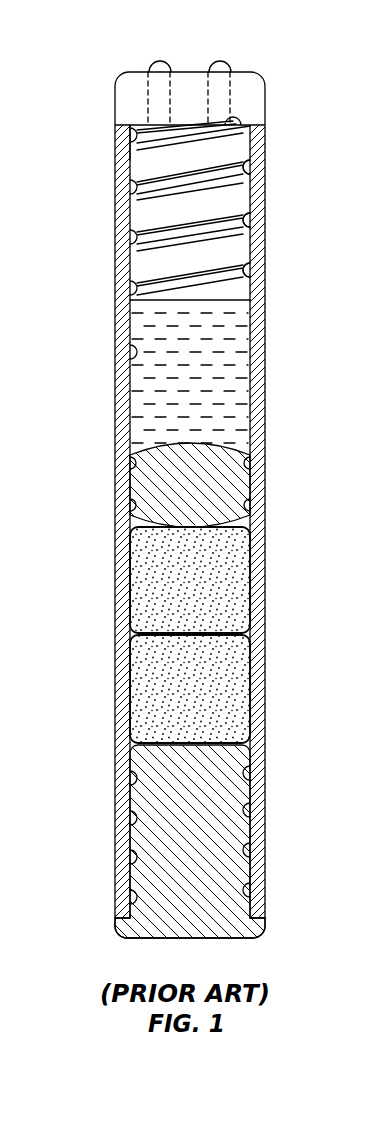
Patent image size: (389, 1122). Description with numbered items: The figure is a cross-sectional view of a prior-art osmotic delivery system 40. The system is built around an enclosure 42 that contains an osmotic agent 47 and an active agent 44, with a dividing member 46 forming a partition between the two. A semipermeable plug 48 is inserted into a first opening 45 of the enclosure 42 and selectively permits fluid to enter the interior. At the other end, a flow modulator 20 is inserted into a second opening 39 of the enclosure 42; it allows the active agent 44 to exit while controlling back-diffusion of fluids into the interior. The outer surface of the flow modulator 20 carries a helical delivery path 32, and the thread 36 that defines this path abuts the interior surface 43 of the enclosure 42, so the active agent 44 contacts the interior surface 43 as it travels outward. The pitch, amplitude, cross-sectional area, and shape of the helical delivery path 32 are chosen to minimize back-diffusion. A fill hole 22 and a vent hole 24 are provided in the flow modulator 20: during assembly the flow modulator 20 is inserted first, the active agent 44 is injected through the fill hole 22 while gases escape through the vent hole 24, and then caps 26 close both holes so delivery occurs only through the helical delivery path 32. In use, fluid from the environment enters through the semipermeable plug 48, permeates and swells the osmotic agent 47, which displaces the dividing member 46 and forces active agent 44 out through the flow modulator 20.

The flow modulator 20 is at (268, 91).
The fill hole 22 is at (157, 97).
The vent hole 24 is at (222, 103).
The caps 26 is at (222, 60).
The helical delivery path 32 is at (127, 183).
The thread 36 is at (122, 160).
The second opening 39 is at (281, 248).
The osmotic delivery system 40 is at (268, 156).
The enclosure 42 is at (122, 312).
The interior surface 43 is at (142, 355).
The active agent 44 is at (140, 392).
The first opening 45 is at (246, 221).
The dividing member 46 is at (140, 487).
The osmotic agent 47 is at (143, 576).
The semipermeable plug 48 is at (150, 803).